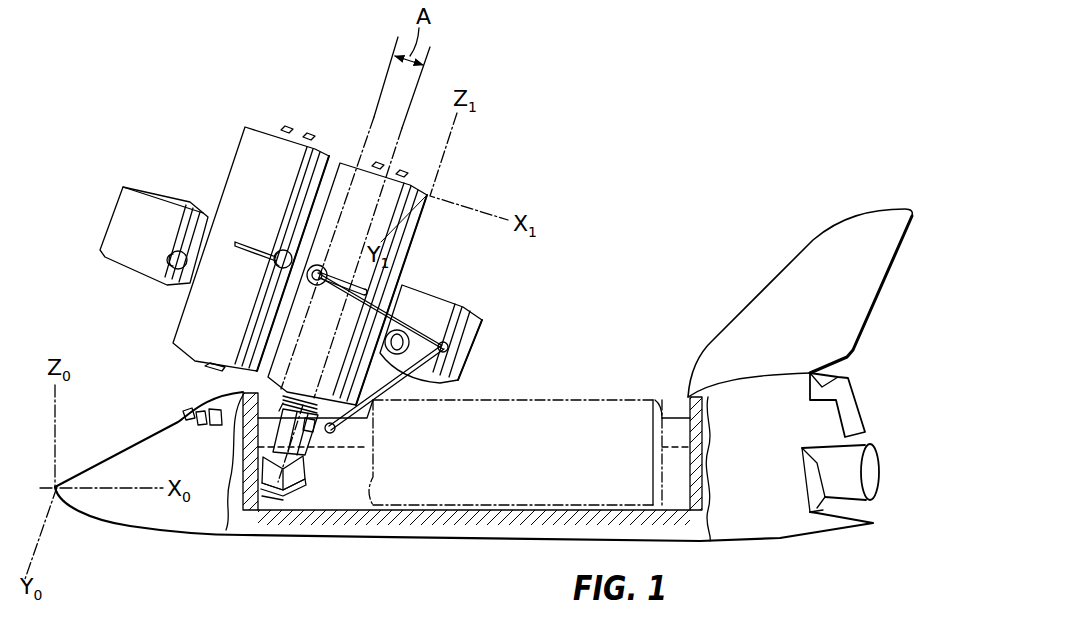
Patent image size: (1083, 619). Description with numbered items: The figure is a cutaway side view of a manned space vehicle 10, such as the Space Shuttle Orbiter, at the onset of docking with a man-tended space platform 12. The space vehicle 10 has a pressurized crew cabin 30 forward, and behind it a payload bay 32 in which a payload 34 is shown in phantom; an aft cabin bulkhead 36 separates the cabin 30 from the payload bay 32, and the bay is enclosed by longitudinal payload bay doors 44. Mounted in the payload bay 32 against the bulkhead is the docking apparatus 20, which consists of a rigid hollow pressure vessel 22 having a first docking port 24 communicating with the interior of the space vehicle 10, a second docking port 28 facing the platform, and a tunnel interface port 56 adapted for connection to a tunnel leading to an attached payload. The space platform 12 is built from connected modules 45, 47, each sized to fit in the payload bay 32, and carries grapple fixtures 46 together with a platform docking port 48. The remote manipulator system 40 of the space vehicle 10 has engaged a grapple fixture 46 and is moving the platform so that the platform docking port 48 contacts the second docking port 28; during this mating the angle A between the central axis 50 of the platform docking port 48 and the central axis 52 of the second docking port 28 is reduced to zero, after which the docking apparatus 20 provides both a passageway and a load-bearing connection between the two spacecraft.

The space vehicle 10 is at (184, 547).
The space platform 12 is at (226, 146).
The docking apparatus 20 is at (305, 455).
The pressure vessel 22 is at (316, 410).
The first docking port 24 is at (273, 498).
The second docking port 28 is at (283, 403).
The crew cabin 30 is at (174, 437).
The payload bay 32 is at (359, 500).
The payload 34 is at (538, 400).
The aft cabin bulkhead 36 is at (247, 528).
The remote manipulator system 40 is at (398, 382).
The payload bay doors 44 is at (672, 443).
The module 45 is at (415, 250).
The grapple fixture 46 is at (278, 268).
The module 47 is at (486, 333).
The platform docking port 48 is at (313, 400).
The central axis of the platform docking port 50 is at (424, 74).
The central axis of the second docking port 52 is at (386, 61).
The tunnel interface port 56 is at (304, 486).